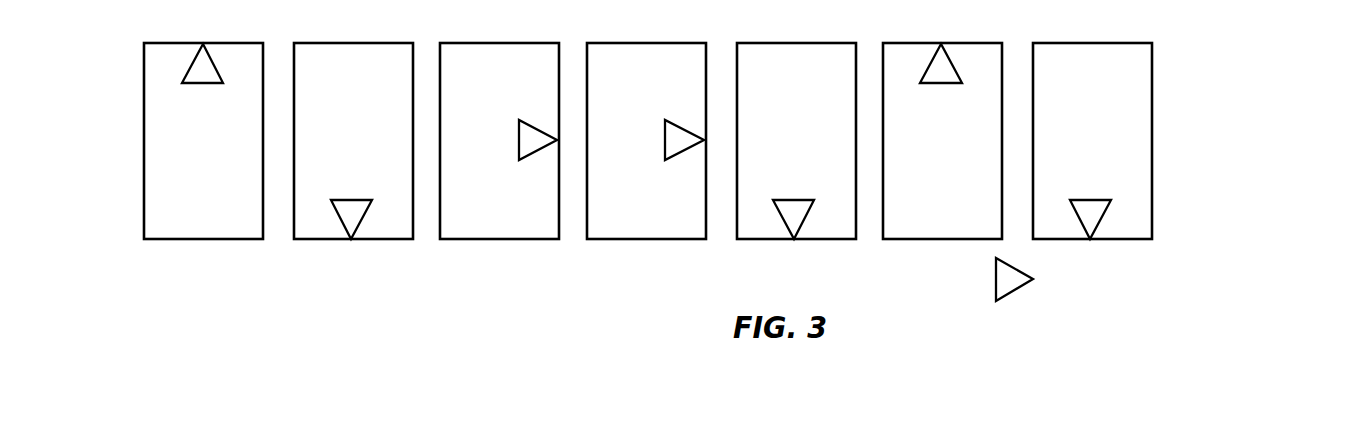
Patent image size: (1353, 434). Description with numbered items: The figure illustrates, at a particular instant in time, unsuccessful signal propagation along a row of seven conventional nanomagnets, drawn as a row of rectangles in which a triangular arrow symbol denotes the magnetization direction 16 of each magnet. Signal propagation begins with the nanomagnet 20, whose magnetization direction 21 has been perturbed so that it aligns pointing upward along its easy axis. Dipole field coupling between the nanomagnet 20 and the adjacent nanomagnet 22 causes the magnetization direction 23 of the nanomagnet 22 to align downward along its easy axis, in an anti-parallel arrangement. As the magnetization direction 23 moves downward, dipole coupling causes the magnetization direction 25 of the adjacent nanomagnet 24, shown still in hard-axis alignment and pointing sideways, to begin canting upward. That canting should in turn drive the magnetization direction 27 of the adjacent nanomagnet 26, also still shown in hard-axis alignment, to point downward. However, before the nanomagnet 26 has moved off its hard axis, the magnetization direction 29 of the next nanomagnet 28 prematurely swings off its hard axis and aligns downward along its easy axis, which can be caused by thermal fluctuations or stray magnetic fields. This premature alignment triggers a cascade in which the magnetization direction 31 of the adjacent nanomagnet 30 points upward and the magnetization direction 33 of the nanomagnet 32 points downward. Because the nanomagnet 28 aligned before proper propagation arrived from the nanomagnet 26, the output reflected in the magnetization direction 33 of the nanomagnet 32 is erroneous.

The magnetization direction 16 is at (1139, 290).
The nanomagnet 20 is at (144, 80).
The magnetization direction 21 is at (203, 84).
The nanomagnet 22 is at (294, 80).
The magnetization direction 23 is at (351, 199).
The nanomagnet 24 is at (440, 80).
The magnetization direction 25 is at (519, 132).
The nanomagnet 26 is at (587, 80).
The magnetization direction 27 is at (665, 132).
The nanomagnet 28 is at (737, 80).
The magnetization direction 29 is at (794, 199).
The nanomagnet 30 is at (883, 80).
The magnetization direction 31 is at (941, 84).
The nanomagnet 32 is at (1033, 80).
The magnetization direction 33 is at (1090, 199).